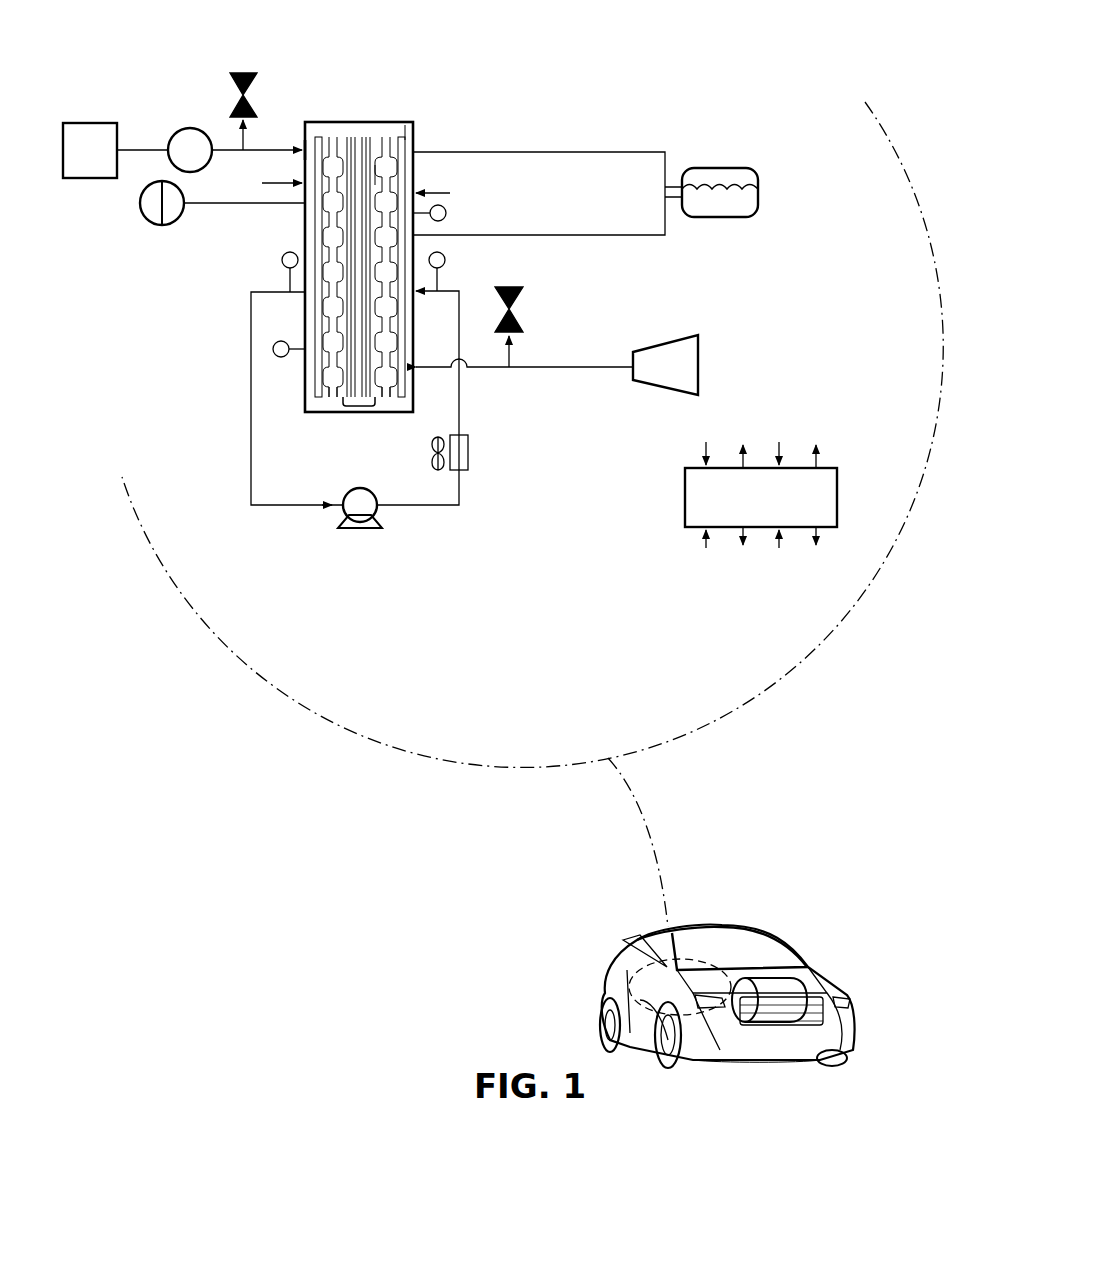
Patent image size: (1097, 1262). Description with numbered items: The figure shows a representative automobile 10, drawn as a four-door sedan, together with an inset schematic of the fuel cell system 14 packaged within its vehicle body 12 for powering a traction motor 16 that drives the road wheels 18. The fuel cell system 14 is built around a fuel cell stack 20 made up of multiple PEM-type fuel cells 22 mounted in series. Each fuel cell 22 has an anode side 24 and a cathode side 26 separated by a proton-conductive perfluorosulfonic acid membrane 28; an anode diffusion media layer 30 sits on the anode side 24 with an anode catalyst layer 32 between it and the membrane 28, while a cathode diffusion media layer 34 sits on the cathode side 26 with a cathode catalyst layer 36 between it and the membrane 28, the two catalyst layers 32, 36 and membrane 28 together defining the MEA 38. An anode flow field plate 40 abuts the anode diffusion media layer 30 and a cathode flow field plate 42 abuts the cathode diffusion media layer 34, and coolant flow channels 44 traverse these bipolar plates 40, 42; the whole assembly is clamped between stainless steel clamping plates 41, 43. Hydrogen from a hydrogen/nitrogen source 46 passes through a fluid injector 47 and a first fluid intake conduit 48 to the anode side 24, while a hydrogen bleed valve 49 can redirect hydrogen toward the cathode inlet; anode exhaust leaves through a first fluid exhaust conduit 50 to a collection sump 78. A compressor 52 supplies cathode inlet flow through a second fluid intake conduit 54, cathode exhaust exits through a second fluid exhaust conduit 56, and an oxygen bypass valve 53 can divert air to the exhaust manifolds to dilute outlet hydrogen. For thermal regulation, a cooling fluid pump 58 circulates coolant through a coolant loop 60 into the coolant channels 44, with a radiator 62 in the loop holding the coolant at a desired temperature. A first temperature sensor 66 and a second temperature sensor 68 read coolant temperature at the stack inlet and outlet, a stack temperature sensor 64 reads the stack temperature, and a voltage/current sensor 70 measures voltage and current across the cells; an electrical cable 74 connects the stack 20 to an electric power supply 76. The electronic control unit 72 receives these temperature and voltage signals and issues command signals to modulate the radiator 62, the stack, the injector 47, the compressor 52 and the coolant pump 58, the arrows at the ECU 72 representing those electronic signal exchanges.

The automobile 10 is at (725, 946).
The vehicle body 12 is at (820, 985).
The fuel cell system 14 is at (755, 58).
The traction motor 16 is at (783, 978).
The road wheel 18 is at (600, 1018).
The fuel cell stack 20 is at (386, 250).
The fuel cell 22 is at (418, 123).
The anode side 24 is at (259, 187).
The cathode side 26 is at (450, 193).
The proton-conductive perfluorosulfonic acid membrane 28 is at (358, 137).
The anode diffusion media layer 30 is at (318, 140).
The anode catalyst layer 32 is at (333, 137).
The cathode diffusion media layer 34 is at (401, 137).
The cathode catalyst layer 36 is at (386, 137).
The MEA 38 is at (360, 406).
The anode flow field plate 40 is at (327, 397).
The clamping plate 41 is at (306, 146).
The cathode flow field plate 42 is at (388, 397).
The clamping plate 43 is at (408, 139).
The coolant flow channels 44 is at (384, 176).
The hydrogen/nitrogen source 46 is at (81, 123).
The fluid injector 47 is at (183, 128).
The fluid intake conduit 48 is at (132, 150).
The hydrogen bleed valve 49 is at (230, 88).
The fluid exhaust conduit 50 is at (626, 235).
The compressor 52 is at (680, 335).
The oxygen bypass valve 53 is at (517, 305).
The fluid intake conduit 54 is at (605, 367).
The fluid exhaust conduit 56 is at (633, 152).
The cooling fluid pump 58 is at (345, 492).
The coolant loop 60 is at (462, 408).
The radiator 62 is at (470, 447).
The stack temperature sensor 64 is at (280, 358).
The first temperature sensor 66 is at (445, 260).
The second temperature sensor 68 is at (282, 257).
The voltage/current sensor 70 is at (446, 213).
The electronic control unit 72 is at (685, 492).
The electrical cable 74 is at (215, 203).
The electric power supply 76 is at (140, 203).
The collection sump 78 is at (742, 168).